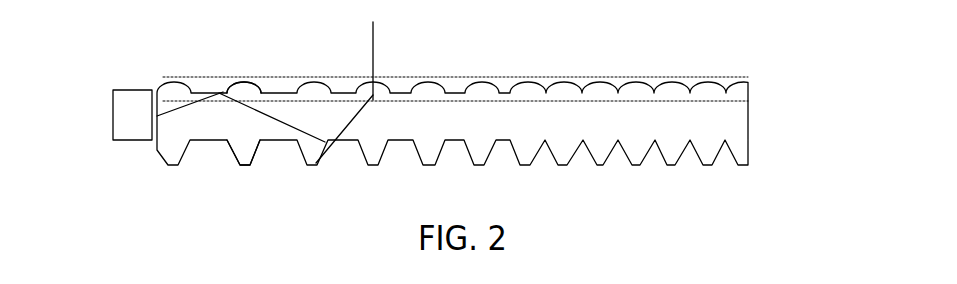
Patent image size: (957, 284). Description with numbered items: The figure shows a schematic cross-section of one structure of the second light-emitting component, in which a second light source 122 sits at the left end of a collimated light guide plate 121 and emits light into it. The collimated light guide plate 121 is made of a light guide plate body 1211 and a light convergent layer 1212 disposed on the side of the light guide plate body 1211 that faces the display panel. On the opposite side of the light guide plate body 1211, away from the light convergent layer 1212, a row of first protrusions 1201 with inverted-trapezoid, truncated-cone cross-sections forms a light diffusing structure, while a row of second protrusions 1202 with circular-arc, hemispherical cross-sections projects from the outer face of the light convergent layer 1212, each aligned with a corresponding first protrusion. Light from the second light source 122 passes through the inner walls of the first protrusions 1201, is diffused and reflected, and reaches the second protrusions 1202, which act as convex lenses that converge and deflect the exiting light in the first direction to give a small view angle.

The collimated light guide plate 121 is at (831, 68).
The light guide plate body 1211 is at (737, 127).
The light convergent layer 1212 is at (749, 81).
The first protrusions 1201 is at (248, 158).
The second protrusions 1202 is at (245, 83).
The second light source 122 is at (122, 118).